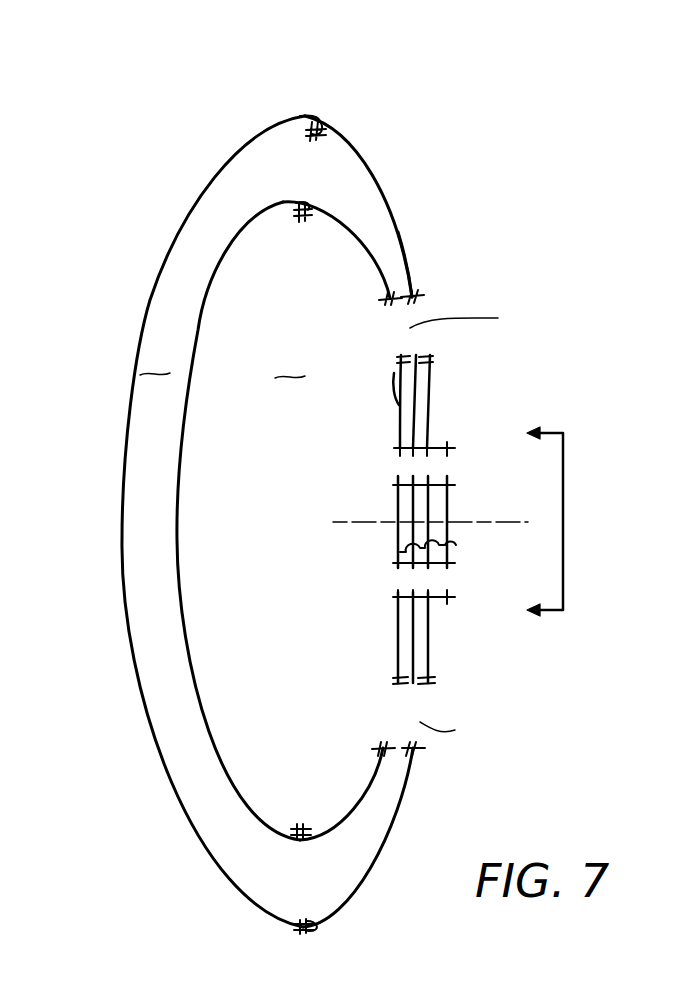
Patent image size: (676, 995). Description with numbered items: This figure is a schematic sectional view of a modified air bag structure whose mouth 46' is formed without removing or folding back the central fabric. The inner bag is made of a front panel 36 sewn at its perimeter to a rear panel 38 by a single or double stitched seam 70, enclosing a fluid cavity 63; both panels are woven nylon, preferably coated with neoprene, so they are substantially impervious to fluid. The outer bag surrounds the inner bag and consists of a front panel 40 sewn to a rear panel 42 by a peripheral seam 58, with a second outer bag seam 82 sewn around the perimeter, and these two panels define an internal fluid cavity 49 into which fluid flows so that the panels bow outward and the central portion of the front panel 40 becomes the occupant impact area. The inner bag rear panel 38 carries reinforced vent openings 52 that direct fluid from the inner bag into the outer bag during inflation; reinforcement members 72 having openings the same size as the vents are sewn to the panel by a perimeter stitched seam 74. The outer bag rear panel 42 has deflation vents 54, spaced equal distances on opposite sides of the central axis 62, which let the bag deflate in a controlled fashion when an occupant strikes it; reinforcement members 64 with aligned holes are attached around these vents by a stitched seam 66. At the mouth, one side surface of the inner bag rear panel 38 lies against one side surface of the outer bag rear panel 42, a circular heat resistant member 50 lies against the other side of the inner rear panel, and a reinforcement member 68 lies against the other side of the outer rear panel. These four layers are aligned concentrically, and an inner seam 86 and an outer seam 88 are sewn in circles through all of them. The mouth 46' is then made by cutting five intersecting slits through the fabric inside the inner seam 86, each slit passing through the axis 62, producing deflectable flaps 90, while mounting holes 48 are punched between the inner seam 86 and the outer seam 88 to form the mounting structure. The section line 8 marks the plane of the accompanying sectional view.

The front panel 36 is at (178, 453).
The rear panel 38 is at (366, 238).
The front panel 40 is at (150, 316).
The rear panel 42 is at (408, 262).
The mouth 46' is at (402, 525).
The mounting holes 48 is at (405, 464).
The internal fluid cavity 49 is at (157, 362).
The heat resistant member 50 is at (396, 416).
The vent openings 52 is at (470, 324).
The vents 54 is at (455, 729).
The seam 58 is at (345, 150).
The central axis 62 is at (504, 534).
The fluid cavity 63 is at (292, 364).
The reinforcement members 64 is at (418, 747).
The stitched seam 66 is at (435, 681).
The reinforcement member 68 is at (450, 484).
The stitched seam 70 is at (303, 210).
The reinforcement members 72 is at (383, 745).
The perimeter stitched seam 74 is at (380, 748).
The second outer bag seam 82 is at (314, 118).
The inner seam 86 is at (450, 502).
The outer seam 88 is at (432, 440).
The deflectable flaps 90 is at (450, 545).
The section line 8- 8 is at (545, 519).